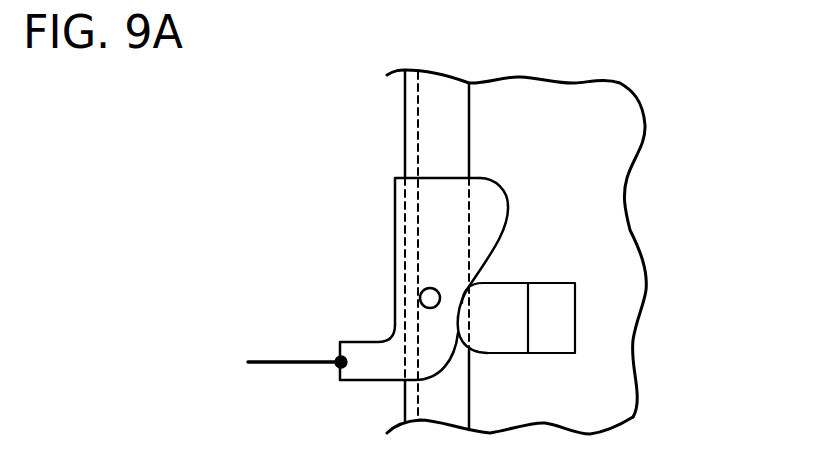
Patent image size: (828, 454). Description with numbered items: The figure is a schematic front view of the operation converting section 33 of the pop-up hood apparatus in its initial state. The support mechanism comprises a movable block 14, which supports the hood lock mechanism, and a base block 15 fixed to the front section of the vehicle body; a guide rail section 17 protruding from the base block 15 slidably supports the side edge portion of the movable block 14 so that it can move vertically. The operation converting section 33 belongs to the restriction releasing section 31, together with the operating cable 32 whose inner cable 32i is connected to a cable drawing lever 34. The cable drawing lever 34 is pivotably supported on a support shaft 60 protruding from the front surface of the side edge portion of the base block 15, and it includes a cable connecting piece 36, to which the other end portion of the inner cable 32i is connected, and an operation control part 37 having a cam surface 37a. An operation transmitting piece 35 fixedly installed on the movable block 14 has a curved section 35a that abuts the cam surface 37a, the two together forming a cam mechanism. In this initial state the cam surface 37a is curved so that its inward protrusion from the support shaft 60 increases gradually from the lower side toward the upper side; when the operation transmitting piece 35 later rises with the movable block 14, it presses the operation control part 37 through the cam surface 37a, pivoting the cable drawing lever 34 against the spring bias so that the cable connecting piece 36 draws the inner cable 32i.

The movable block 14 is at (607, 98).
The base block 15 is at (443, 75).
The guide rail section 17 is at (428, 78).
The restriction releasing section 31 is at (472, 225).
The operating cable 32 is at (305, 310).
The inner cable 32i is at (280, 358).
The operation converting section 33 is at (375, 238).
The cable drawing lever 34 is at (393, 197).
The operation transmitting piece 35 is at (516, 314).
The curved section 35a is at (456, 318).
The cable connecting piece 36 is at (350, 371).
The operation control part 37 is at (488, 203).
The cam surface 37a is at (507, 247).
The support shaft 60 is at (421, 292).